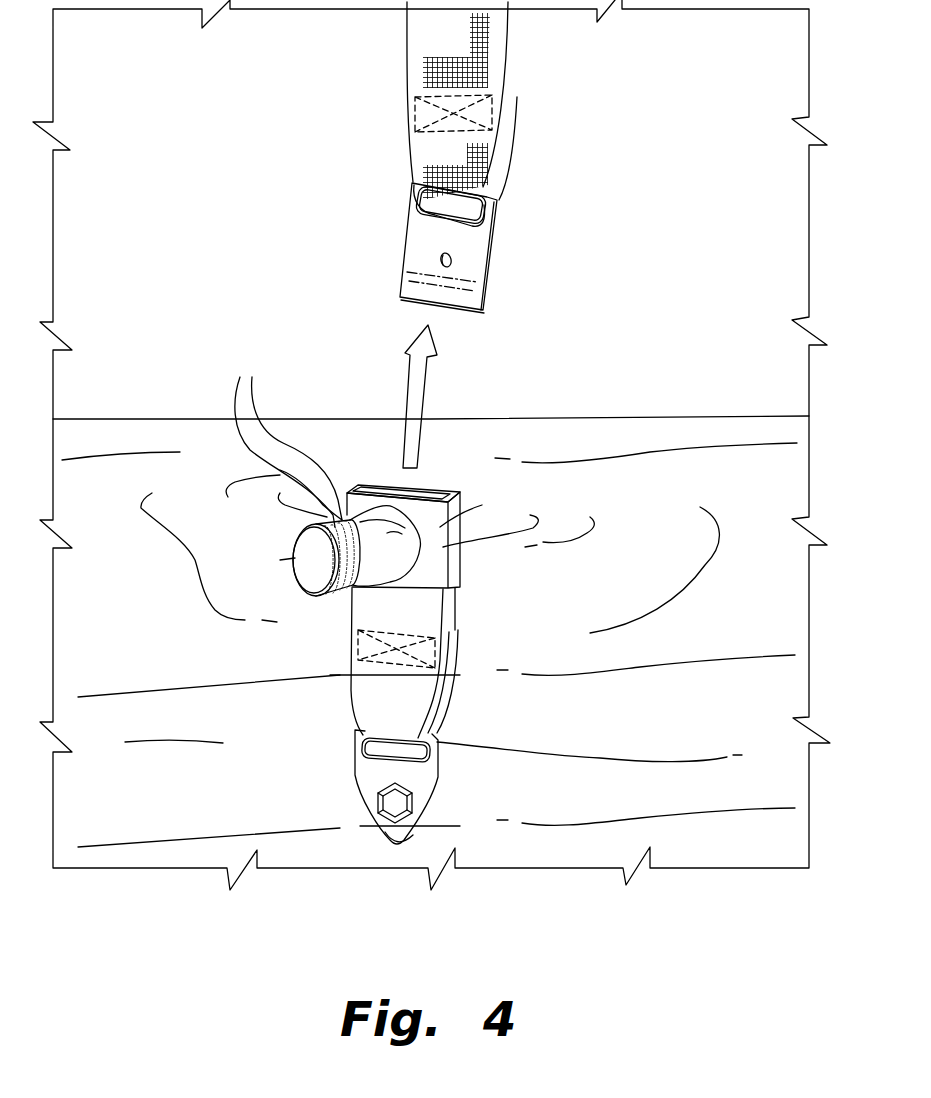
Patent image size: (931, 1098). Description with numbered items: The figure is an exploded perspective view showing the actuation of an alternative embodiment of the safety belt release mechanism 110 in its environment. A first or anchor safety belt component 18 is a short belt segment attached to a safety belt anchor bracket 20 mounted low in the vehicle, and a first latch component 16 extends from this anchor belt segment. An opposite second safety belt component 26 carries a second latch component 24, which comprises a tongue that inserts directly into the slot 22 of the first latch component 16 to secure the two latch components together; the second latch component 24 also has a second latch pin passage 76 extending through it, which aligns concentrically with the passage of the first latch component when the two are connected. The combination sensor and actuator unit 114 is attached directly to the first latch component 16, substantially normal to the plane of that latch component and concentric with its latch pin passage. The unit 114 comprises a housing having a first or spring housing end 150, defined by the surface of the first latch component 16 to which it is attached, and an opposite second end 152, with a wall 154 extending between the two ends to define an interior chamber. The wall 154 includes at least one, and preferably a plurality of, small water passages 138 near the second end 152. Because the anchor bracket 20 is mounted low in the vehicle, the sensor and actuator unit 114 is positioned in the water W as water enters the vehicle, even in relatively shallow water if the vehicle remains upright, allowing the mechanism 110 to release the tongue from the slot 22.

The first latch component 16 is at (462, 557).
The first or anchor safety belt component 18 is at (452, 694).
The safety belt anchor bracket 20 is at (442, 779).
The slot 22 is at (437, 493).
The second latch component 24 is at (497, 262).
The second safety belt component 26 is at (405, 106).
The second latch pin passage 76 is at (438, 263).
The safety belt release mechanism 110 is at (265, 730).
The combination sensor and actuator unit 114 is at (397, 553).
The water passage 138 is at (282, 434).
The first or spring housing end 150 is at (380, 494).
The second end 152 is at (293, 556).
The wall 154 is at (357, 587).
The water W is at (638, 433).